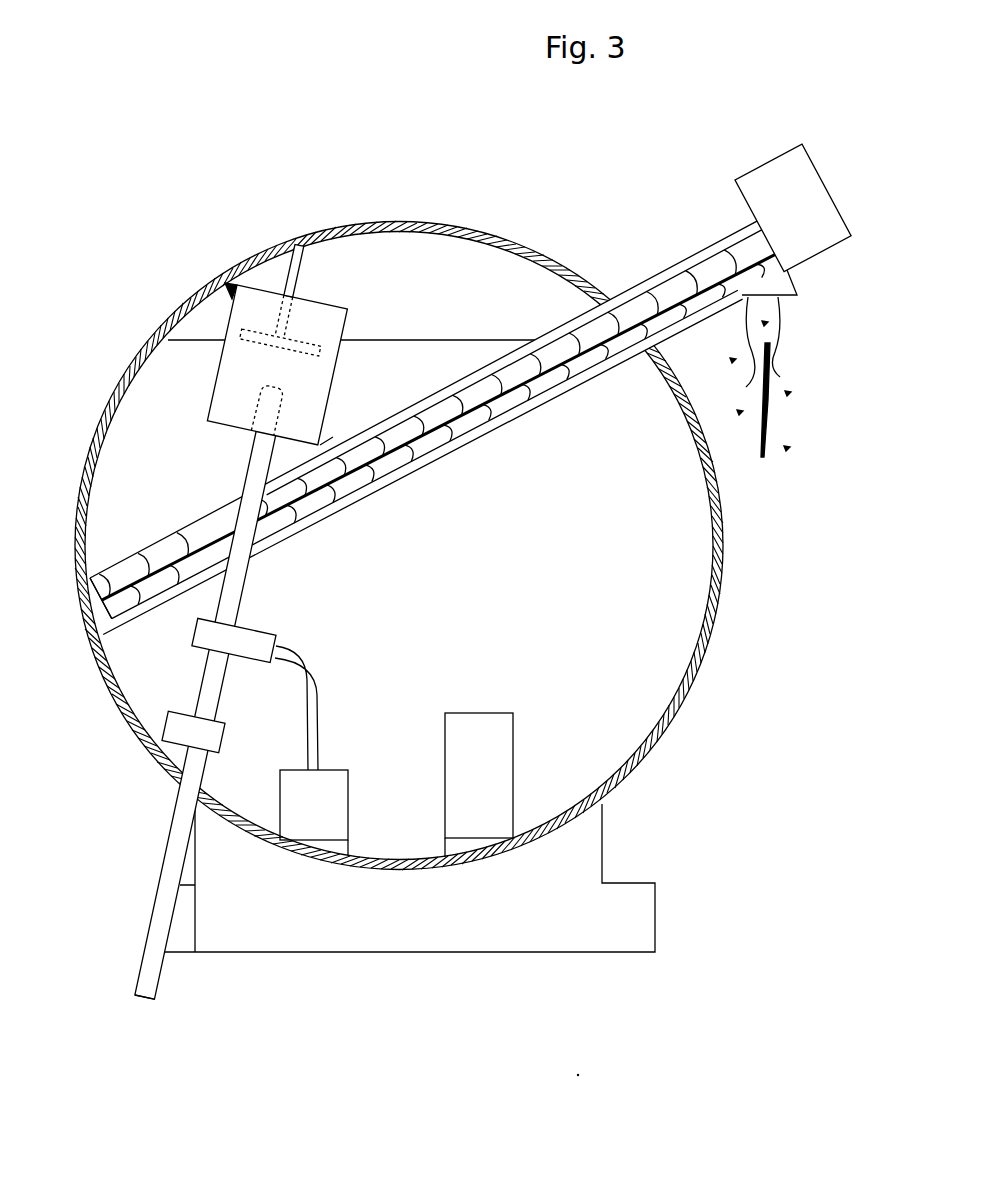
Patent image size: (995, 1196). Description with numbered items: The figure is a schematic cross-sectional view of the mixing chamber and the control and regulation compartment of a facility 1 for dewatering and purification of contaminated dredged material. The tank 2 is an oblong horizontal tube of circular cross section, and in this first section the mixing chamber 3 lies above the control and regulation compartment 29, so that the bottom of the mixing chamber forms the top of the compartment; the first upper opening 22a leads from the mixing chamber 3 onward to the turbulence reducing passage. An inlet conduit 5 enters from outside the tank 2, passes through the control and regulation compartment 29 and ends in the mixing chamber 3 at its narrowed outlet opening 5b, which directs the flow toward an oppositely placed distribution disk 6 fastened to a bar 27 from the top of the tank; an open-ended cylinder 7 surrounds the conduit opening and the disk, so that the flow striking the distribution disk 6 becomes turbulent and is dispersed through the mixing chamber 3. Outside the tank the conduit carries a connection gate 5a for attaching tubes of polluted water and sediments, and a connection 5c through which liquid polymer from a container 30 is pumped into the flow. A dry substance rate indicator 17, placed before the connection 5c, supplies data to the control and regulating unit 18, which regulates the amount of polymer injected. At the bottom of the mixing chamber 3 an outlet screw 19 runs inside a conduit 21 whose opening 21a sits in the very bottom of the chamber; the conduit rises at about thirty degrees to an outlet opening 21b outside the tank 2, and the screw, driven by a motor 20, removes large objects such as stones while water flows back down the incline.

The facility 1 is at (133, 175).
The tank 2 is at (722, 523).
The mixing chamber 3 is at (161, 488).
The inlet conduit 5 is at (234, 478).
The connection gate 5a is at (135, 998).
The outlet opening 5b is at (273, 387).
The connection 5c is at (208, 645).
The distribution disk 6 is at (333, 307).
The cylinder 7 is at (322, 352).
The dry substance rate indicator 17 is at (175, 730).
The control and regulating unit 18 is at (493, 783).
The outlet screw 19 is at (492, 394).
The motor 20 is at (765, 183).
The conduit 21 is at (440, 450).
The opening 21a is at (136, 540).
The outlet opening 21b is at (772, 283).
The first upper opening 22a is at (482, 290).
The bar 27 is at (290, 281).
The control and regulation compartment 29 is at (616, 608).
The container 30 is at (323, 827).